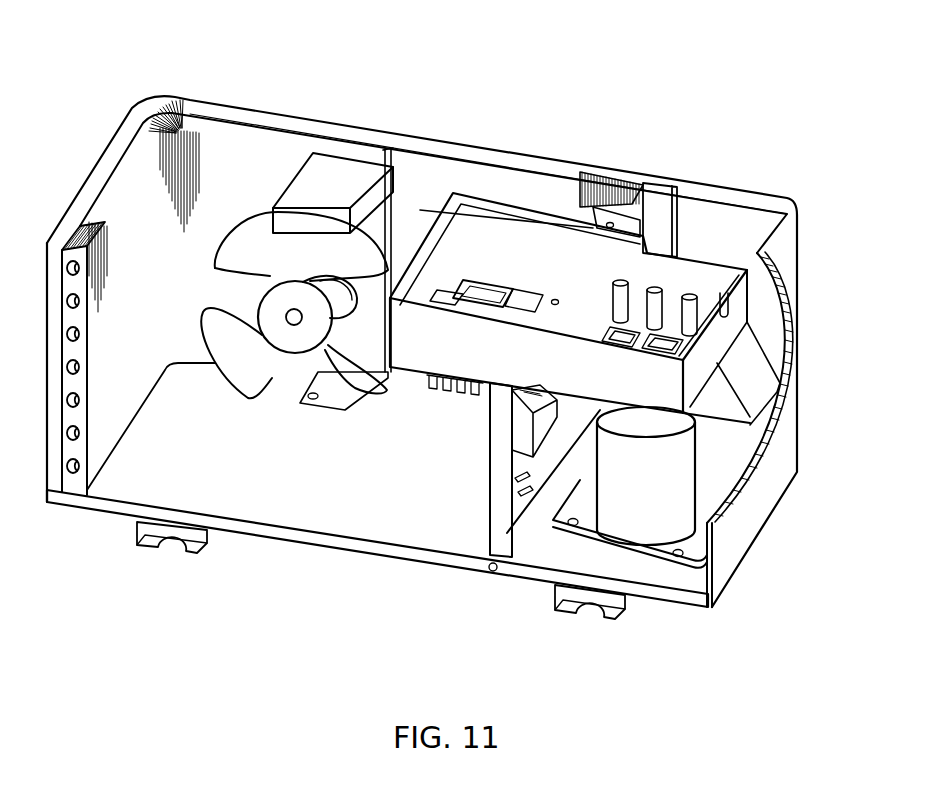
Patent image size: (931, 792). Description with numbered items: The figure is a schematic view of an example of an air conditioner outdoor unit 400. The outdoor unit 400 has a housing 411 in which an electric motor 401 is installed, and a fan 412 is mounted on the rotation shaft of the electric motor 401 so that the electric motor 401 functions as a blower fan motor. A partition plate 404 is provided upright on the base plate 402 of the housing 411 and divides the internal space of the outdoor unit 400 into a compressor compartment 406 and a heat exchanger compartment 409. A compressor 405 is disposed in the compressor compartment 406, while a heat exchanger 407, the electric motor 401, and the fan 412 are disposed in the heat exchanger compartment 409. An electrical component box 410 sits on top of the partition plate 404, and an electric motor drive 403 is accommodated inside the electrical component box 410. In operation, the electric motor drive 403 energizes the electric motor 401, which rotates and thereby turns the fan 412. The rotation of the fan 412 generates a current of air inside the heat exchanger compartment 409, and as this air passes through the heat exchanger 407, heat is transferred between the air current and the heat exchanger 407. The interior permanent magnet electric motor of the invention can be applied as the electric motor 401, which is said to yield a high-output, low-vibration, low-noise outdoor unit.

The air conditioner outdoor unit 400 is at (150, 78).
The electric motor 401 is at (355, 287).
The base plate 402 is at (313, 498).
The electric motor drive 403 is at (488, 297).
The partition plate 404 is at (498, 498).
The compressor 405 is at (683, 481).
The compressor compartment 406 is at (540, 545).
The heat exchanger 407 is at (262, 128).
The heat exchanger compartment 409 is at (137, 472).
The electrical component box 410 is at (727, 272).
The housing 411 is at (457, 140).
The fan 412 is at (262, 385).